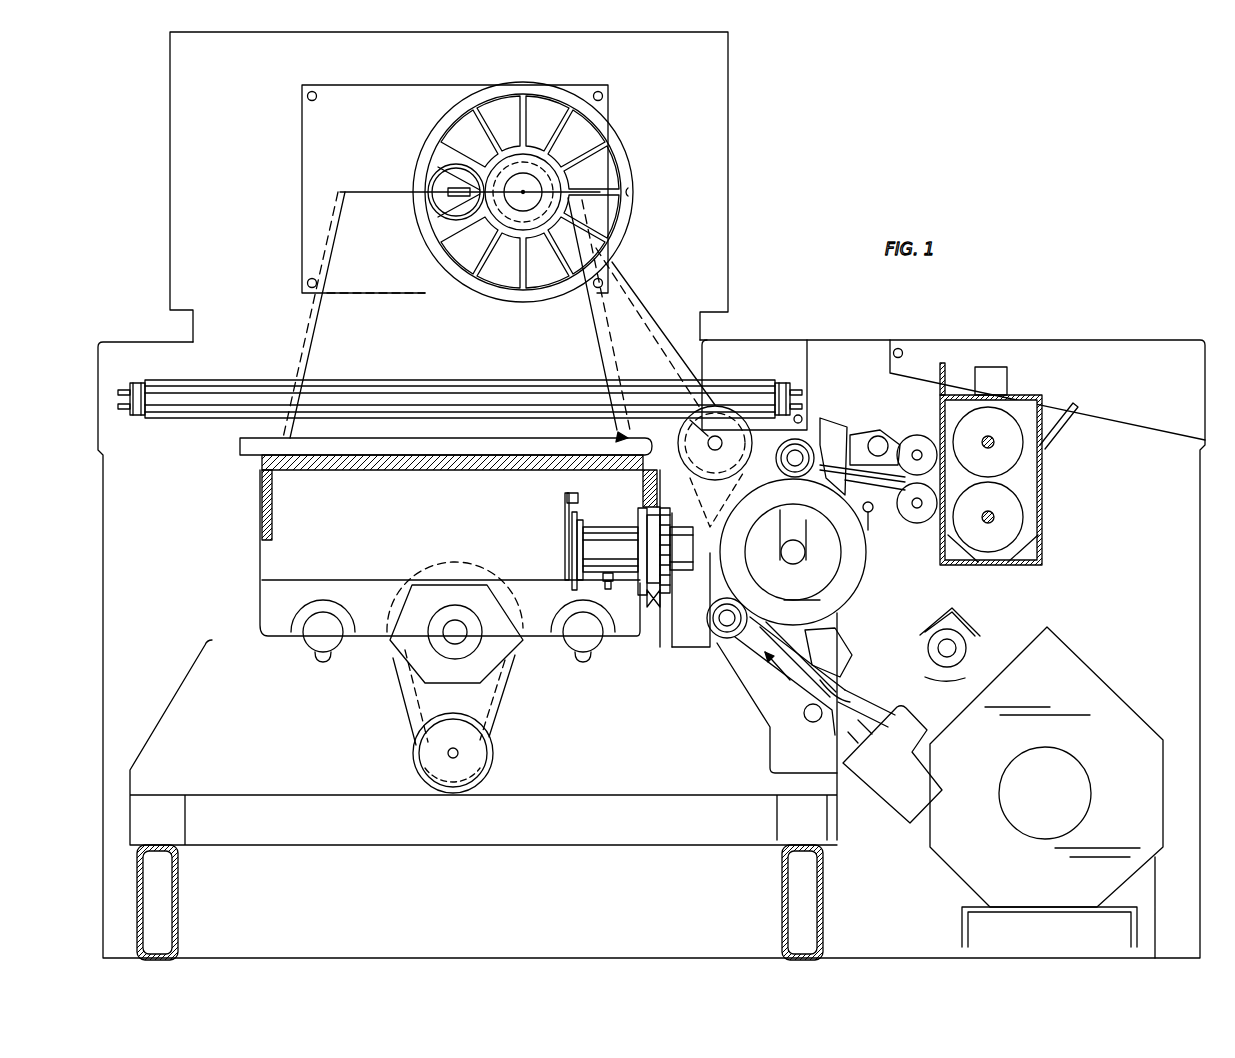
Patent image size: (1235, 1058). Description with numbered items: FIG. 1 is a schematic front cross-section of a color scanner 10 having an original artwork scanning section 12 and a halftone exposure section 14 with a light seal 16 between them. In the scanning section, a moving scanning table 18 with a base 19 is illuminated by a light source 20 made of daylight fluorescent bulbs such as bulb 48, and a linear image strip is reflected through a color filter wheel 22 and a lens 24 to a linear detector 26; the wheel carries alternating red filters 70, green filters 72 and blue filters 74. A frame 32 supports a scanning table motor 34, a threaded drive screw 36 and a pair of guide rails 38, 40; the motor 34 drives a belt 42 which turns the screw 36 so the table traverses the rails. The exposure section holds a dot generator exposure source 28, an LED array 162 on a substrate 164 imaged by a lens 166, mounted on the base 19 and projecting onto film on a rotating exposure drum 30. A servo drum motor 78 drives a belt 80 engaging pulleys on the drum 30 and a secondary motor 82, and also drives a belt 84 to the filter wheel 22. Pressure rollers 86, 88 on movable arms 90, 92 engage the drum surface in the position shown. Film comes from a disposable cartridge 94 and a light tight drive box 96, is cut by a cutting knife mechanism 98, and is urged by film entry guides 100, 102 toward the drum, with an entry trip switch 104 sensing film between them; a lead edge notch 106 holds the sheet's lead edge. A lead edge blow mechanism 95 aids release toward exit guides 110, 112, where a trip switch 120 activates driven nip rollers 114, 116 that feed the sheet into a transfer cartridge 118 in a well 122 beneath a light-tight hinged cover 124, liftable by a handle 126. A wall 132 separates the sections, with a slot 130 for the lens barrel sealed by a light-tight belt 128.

The color scanner 10 is at (145, 238).
The original artwork scanning section 12 is at (270, 166).
The halftone exposure section 14 is at (905, 603).
The light seal 16 is at (624, 432).
The scanning table 18 is at (228, 517).
The scanning table base 19 is at (262, 528).
The light source 20 is at (262, 352).
The color filter wheel 22 is at (470, 222).
The lens 24 is at (437, 207).
The linear detector 26 is at (428, 191).
The dot generator exposure source 28 is at (600, 528).
The rotating exposure drum 30 is at (842, 608).
The frame 32 is at (136, 888).
The scanning table motor 34 is at (493, 756).
The threaded drive screw 36 is at (460, 640).
The scanning table guide rail 38 is at (318, 640).
The scanning table guide rail 40 is at (590, 648).
The belt 42 is at (498, 690).
The daylight fluorescent bulb 48 is at (208, 385).
The red filter 70 is at (514, 129).
The green filter 72 is at (556, 131).
The blue filter 74 is at (478, 150).
The servo drum motor 78 is at (735, 425).
The belt 80 is at (717, 498).
The secondary motor 82 is at (830, 418).
The belt 84 is at (648, 340).
The pressure roller 86 is at (785, 470).
The pressure roller 88 is at (718, 636).
The movable arm 90 is at (873, 435).
The movable arm 92 is at (762, 690).
The disposable cartridge 94 is at (1115, 705).
The lead edge blow mechanism 95 is at (848, 588).
The light tight drive box 96 is at (882, 796).
The cutting knife mechanism 98 is at (958, 664).
The film entry guide 100 is at (845, 676).
The film entry guide 102 is at (826, 722).
The entry trip switch 104 is at (836, 650).
The lead edge notch 106 is at (748, 660).
The exit guide 110 is at (900, 512).
The exit guide 112 is at (790, 535).
The driven nip roller 114 is at (920, 523).
The driven nip roller 116 is at (918, 435).
The transfer cartridge 118 is at (1040, 487).
The trip switch 120 is at (855, 432).
The transfer cartridge well 122 is at (1040, 548).
The light-tight hinged cover 124 is at (1158, 342).
The handle 126 is at (1008, 372).
The light-tight belt 128 is at (647, 597).
The slot 130 is at (668, 535).
The wall 132 is at (745, 380).
The LED array 162 is at (571, 545).
The substrate 164 is at (564, 502).
The lens 166 is at (700, 568).